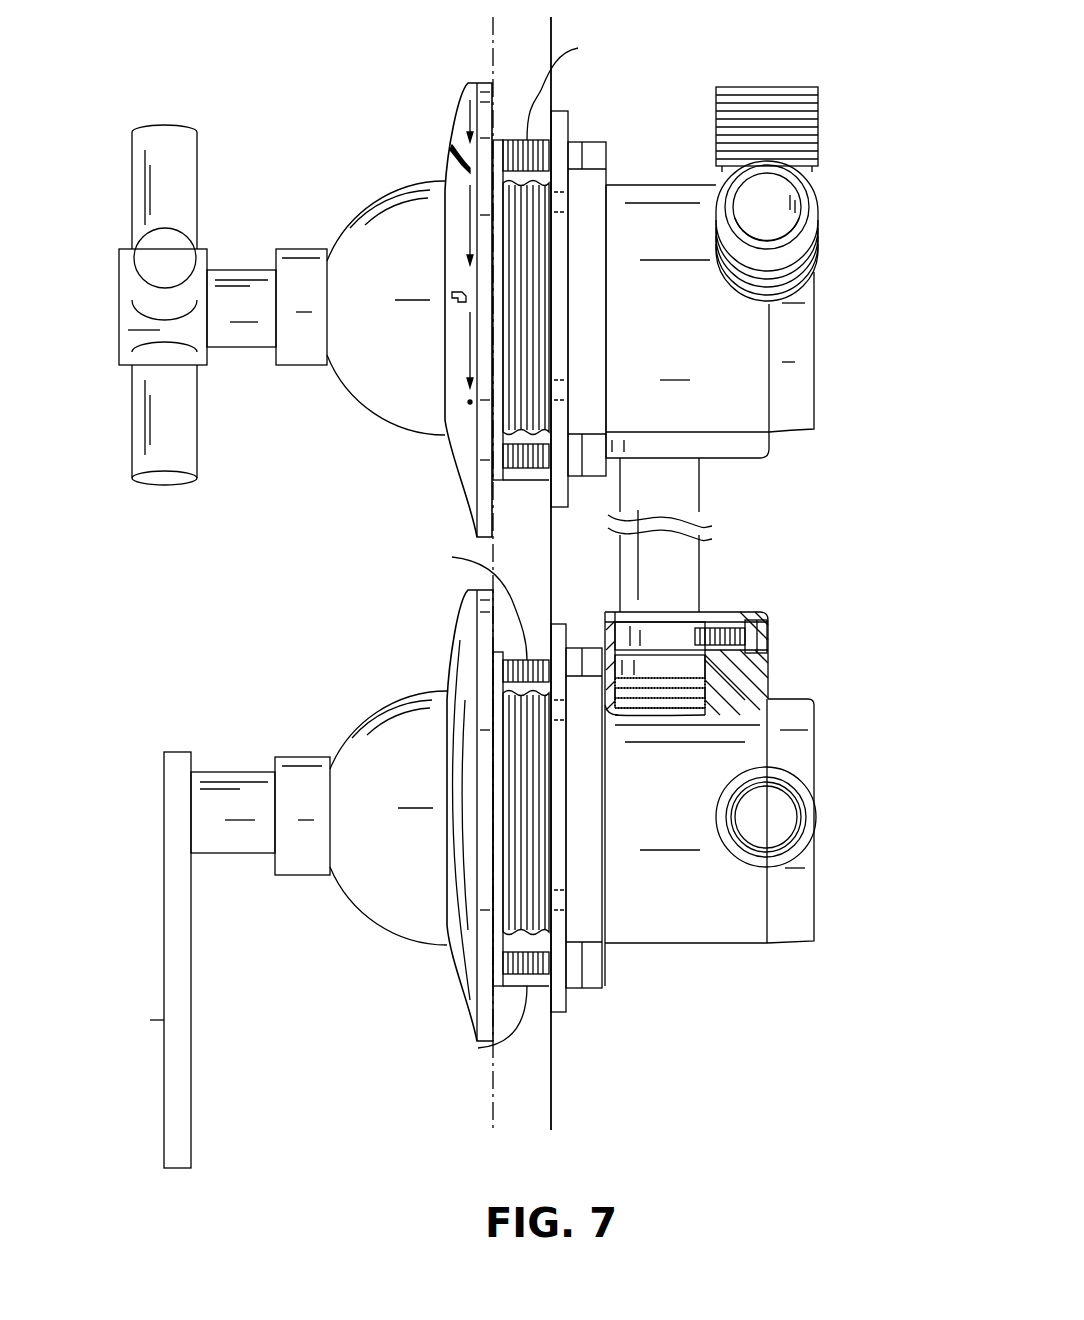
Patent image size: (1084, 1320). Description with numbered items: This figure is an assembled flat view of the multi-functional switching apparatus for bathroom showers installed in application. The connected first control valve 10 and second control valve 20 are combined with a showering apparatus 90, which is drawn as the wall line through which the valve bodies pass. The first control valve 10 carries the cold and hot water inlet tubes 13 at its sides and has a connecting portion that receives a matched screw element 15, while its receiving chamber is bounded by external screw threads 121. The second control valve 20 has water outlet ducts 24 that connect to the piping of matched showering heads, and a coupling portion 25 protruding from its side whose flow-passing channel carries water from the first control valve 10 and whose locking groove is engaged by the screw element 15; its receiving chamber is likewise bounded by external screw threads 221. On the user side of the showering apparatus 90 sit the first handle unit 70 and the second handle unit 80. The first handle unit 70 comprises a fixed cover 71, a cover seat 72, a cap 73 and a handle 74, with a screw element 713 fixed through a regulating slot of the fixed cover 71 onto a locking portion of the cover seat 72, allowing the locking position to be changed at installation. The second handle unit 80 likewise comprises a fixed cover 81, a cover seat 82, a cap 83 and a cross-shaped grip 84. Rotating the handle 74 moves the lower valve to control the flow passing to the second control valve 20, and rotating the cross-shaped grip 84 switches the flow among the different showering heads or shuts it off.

The first control valve 10 is at (829, 686).
The cold and hot water inlet tubes 13 is at (817, 836).
The screw element 15 is at (740, 634).
The second control valve 20 is at (832, 340).
The water outlet ducts 24 is at (822, 234).
The coupling portion 25 is at (700, 495).
The first handle unit 70 is at (287, 709).
The fixed cover 71 is at (576, 1002).
The cover seat 72 is at (450, 637).
The cap 73 is at (357, 913).
The handle 74 is at (162, 1030).
The second handle unit 80 is at (296, 175).
The fixed cover 81 is at (577, 118).
The cover seat 82 is at (452, 122).
The cap 83 is at (361, 415).
The cross-shaped grip 84 is at (131, 174).
The showering apparatus 90 is at (568, 1084).
The external screw threads 121 is at (483, 763).
The external screw threads 221 is at (558, 251).
The screw element 713 is at (517, 1042).